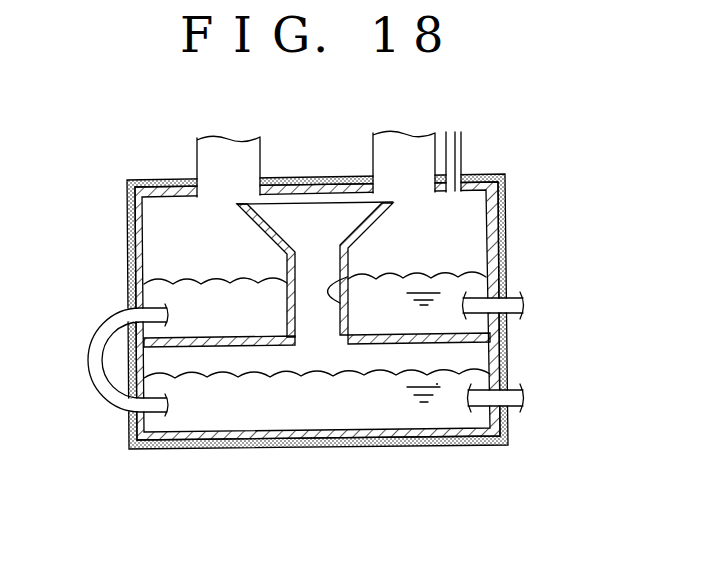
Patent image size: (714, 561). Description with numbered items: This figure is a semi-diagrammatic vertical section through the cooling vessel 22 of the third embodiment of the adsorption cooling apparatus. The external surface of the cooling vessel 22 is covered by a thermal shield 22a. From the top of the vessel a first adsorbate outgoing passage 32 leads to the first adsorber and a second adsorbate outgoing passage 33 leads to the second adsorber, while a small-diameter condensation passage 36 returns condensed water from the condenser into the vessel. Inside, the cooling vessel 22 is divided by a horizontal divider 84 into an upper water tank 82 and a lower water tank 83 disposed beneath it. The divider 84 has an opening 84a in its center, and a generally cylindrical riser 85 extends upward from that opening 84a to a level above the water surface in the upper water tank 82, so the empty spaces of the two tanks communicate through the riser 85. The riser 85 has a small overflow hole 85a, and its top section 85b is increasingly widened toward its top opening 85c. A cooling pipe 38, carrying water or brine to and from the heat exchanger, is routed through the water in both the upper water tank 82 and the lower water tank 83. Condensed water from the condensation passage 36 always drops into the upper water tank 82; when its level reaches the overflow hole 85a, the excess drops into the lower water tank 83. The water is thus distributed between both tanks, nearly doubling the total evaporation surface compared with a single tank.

The cooling vessel 22 is at (124, 196).
The thermal shield 22a is at (505, 245).
The first adsorbate outgoing passage 32 is at (208, 163).
The second adsorbate outgoing passage 33 is at (382, 153).
The condensation passage 36 is at (467, 148).
The cooling pipe 38 is at (90, 347).
The upper water tank 82 is at (176, 303).
The lower water tank 83 is at (225, 413).
The horizontal divider 84 is at (385, 340).
The opening 84a is at (313, 340).
The riser 85 is at (334, 237).
The overflow hole 85a is at (285, 268).
The top section 85b is at (372, 229).
The top opening 85c is at (302, 203).